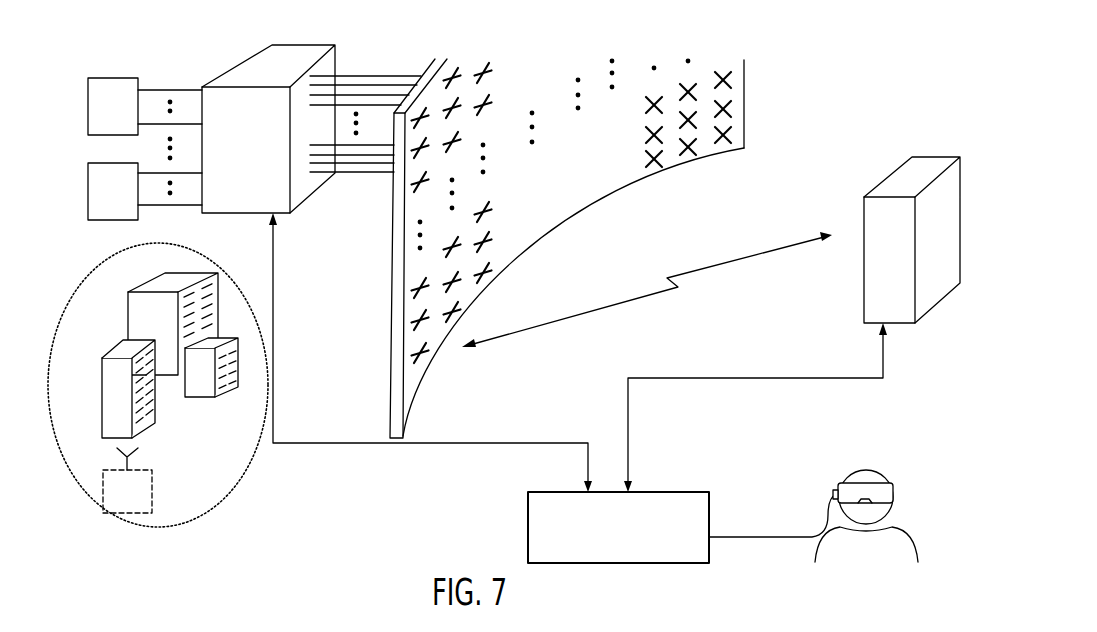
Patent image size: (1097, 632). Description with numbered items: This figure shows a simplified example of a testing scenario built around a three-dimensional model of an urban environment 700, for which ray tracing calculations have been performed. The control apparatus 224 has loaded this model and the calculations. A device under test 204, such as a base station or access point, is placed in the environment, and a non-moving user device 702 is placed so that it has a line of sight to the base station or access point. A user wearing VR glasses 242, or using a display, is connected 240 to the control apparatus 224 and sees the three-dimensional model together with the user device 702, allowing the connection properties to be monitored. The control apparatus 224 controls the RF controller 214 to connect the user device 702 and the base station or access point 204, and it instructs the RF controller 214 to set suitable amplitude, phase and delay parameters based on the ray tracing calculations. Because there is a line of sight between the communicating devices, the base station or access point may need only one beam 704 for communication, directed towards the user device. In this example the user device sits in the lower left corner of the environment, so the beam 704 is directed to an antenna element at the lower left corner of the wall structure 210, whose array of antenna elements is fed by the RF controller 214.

The RF controller 214 is at (273, 44).
The wall structure 210 is at (746, 73).
The device under test 204 is at (919, 155).
The beam 704 is at (712, 264).
The urban environment 700 is at (250, 503).
The user device 702 is at (110, 514).
The control apparatus 224 is at (582, 563).
The connection 240 is at (793, 535).
The VR glasses 242 is at (895, 495).